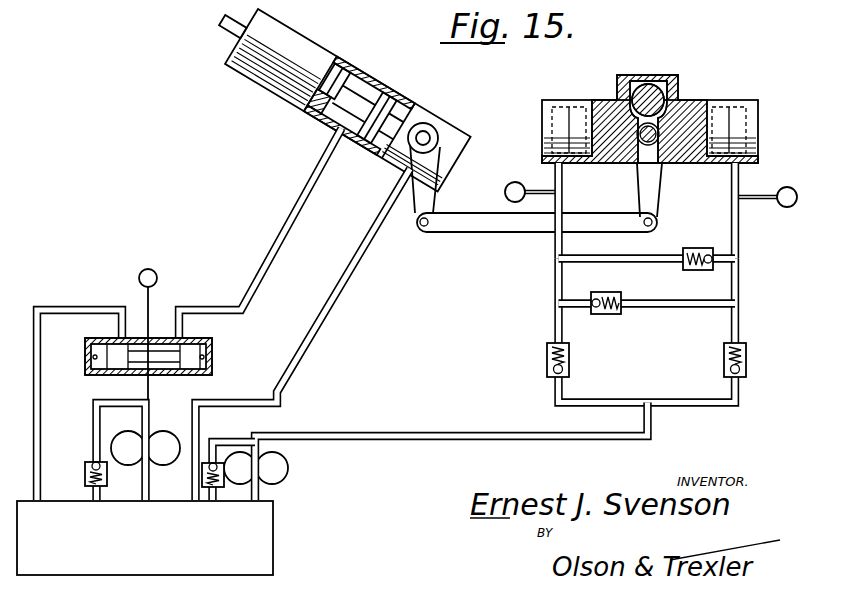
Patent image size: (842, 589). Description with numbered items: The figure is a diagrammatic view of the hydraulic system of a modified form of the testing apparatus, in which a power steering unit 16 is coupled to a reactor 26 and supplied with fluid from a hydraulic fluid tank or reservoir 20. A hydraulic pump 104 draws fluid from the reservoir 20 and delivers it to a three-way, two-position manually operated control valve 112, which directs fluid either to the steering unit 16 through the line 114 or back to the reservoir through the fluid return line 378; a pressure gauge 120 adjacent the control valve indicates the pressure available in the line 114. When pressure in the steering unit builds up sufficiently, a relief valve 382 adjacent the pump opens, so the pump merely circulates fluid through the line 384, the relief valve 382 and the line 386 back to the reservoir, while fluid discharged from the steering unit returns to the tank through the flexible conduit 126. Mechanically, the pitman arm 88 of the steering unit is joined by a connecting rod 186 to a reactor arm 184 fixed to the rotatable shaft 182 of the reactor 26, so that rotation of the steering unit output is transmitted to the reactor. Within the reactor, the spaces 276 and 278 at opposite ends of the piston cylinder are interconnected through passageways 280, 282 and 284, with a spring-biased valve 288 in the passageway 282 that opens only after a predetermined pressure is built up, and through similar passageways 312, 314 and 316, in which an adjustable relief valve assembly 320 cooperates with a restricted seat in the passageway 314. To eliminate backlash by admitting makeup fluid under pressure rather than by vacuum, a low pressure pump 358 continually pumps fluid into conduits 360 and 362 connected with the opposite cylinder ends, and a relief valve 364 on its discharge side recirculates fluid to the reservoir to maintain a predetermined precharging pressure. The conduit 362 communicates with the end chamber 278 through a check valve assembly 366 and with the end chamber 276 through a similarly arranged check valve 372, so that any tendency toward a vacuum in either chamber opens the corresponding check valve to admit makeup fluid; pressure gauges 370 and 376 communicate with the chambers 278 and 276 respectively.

The power steering unit 16 is at (317, 47).
The pitman arm 88 is at (433, 203).
The connecting rod 186 is at (468, 226).
The reactor arm 184 is at (650, 192).
The reactor 26 is at (722, 93).
The rotatable shaft 182 is at (651, 83).
The space 276 is at (556, 122).
The space 278 is at (748, 127).
The pressure gauge 376 is at (515, 182).
The pressure gauge 370 is at (788, 187).
The passageway 316 is at (556, 250).
The passageway 280 is at (556, 298).
The passageway 312 is at (740, 232).
The passageway 284 is at (738, 288).
The passageway 314 is at (601, 258).
The passageway 282 is at (678, 310).
The conduit 362 is at (676, 410).
The hydraulic pump 104 is at (168, 424).
The low pressure pump 358 is at (273, 475).
The conduit 360 is at (398, 430).
The adjustable relief valve assembly 320 is at (691, 274).
The valve 288 is at (607, 318).
The check valve 372 is at (547, 358).
The check valve assembly 366 is at (745, 362).
The pressure gauge 120 is at (154, 274).
The fluid return line 378 is at (80, 307).
The line 114 is at (290, 236).
The flexible conduit 126 is at (345, 298).
The line 384 is at (92, 413).
The line 386 is at (98, 490).
The relief valve 364 is at (222, 487).
The relief valve 382 is at (86, 462).
The control valve 112 is at (213, 348).
The hydraulic fluid tank 20 is at (258, 546).